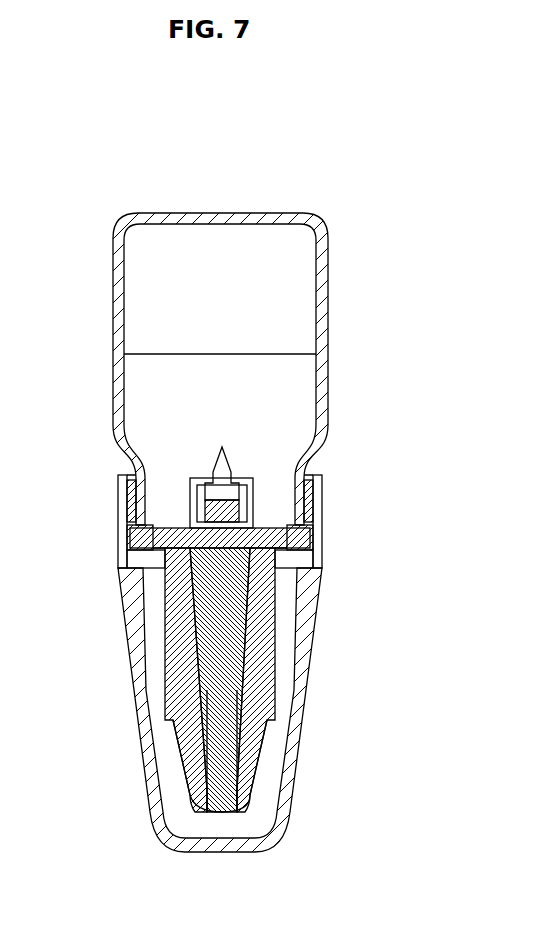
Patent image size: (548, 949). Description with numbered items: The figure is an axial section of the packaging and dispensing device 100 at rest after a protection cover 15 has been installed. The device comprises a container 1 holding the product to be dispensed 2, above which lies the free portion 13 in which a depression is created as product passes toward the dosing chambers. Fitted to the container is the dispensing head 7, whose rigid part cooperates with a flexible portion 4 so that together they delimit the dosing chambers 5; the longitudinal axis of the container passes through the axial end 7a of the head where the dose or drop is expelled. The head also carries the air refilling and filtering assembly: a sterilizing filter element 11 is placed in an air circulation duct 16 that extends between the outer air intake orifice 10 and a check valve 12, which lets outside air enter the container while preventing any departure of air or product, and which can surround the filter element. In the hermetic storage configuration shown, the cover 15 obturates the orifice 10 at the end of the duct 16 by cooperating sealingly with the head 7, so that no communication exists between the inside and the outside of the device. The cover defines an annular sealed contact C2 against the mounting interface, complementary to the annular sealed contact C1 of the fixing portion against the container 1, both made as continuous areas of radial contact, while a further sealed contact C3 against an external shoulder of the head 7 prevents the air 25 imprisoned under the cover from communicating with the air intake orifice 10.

The container 1 is at (116, 238).
The product to be dispensed 2 is at (192, 390).
The flexible portion 4 is at (270, 713).
The dosing chambers 5 is at (205, 692).
The dispensing head 7 is at (160, 625).
The axial end 7a is at (238, 788).
The outer orifice 10 is at (312, 535).
The filter element 11 is at (243, 503).
The check valve 12 is at (222, 450).
The free portion 13 is at (208, 260).
The protection cover 15 is at (157, 832).
The air circulation duct 16 is at (313, 580).
The air imprisoned under the cover 25 is at (247, 822).
The packaging and dispensing device 100 is at (381, 641).
The annular sealed contact C1 is at (130, 490).
The annular sealed contact C2 is at (120, 526).
The sealed contact C3 is at (130, 567).